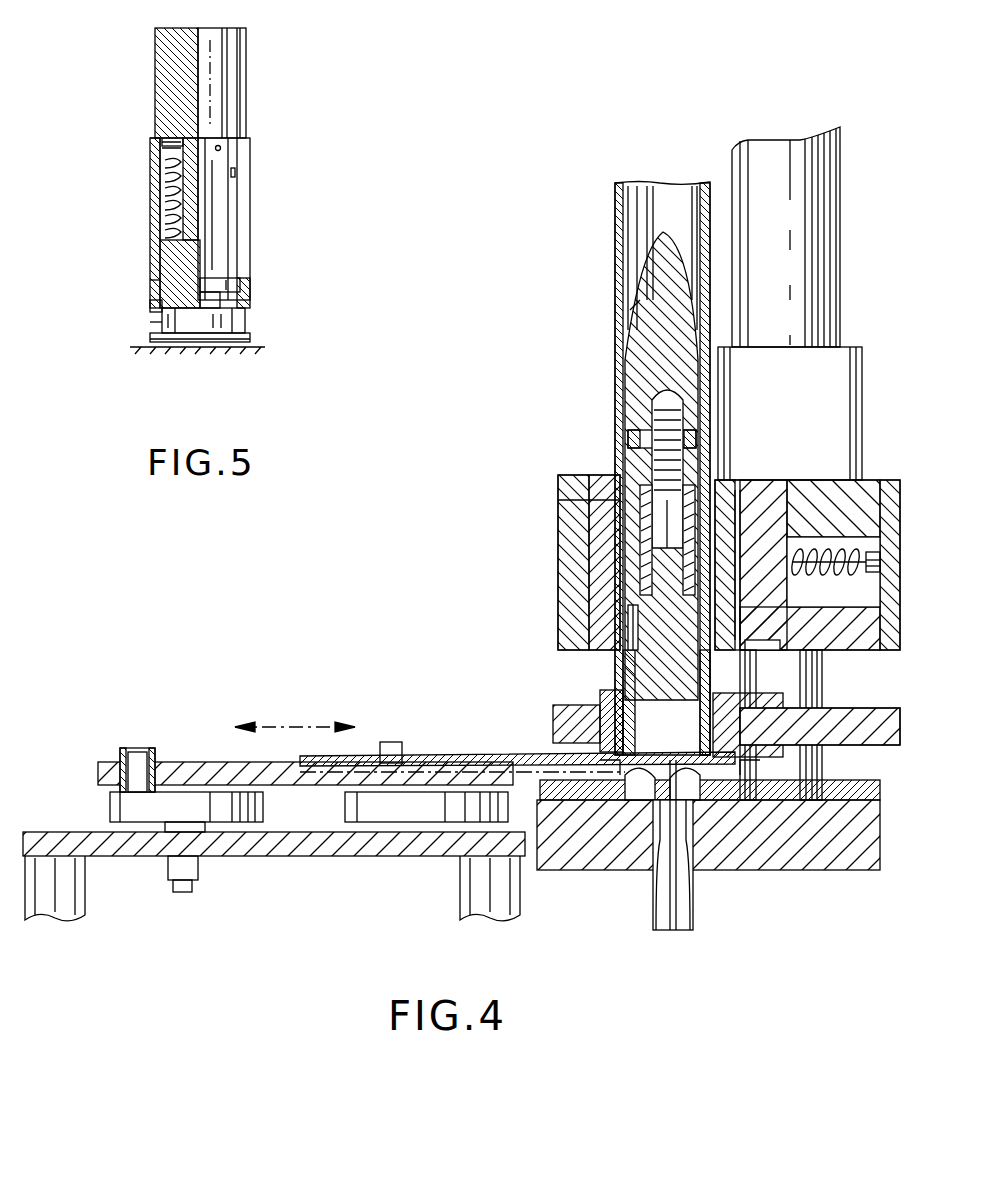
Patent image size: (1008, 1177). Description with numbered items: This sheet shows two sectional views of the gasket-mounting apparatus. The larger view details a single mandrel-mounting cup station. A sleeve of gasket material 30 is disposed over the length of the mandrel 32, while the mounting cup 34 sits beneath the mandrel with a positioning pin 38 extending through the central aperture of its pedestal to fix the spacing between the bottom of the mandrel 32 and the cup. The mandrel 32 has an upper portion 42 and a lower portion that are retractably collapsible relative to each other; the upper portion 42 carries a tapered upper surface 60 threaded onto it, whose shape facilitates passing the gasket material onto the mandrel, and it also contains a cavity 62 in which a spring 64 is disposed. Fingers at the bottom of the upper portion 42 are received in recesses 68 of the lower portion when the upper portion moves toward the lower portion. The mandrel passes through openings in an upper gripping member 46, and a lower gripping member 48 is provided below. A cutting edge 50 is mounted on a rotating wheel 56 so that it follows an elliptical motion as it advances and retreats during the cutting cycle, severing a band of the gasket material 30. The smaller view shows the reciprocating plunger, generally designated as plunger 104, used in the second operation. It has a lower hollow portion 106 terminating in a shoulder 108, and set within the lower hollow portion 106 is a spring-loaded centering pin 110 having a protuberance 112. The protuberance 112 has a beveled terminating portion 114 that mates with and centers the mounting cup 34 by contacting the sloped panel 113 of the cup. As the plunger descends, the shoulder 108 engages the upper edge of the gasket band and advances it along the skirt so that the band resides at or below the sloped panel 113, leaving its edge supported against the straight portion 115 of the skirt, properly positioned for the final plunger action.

In FIG. 5, the gasket material 30 is at (250, 325).
In FIG. 4, the gasket material 30 is at (615, 286).
In FIG. 4, the mandrel 32 is at (648, 340).
In FIG. 5, the mounting cup 34 is at (152, 340).
In FIG. 4, the mounting cup 34 is at (645, 805).
In FIG. 4, the positioning pin 38 is at (690, 812).
In FIG. 4, the upper portion 42 is at (640, 468).
In FIG. 4, the upper gripping member 46 is at (575, 546).
In FIG. 4, the lower gripping member 48 is at (568, 712).
In FIG. 4, the cutting edge 50 is at (530, 755).
In FIG. 4, the rotating wheel 56 is at (115, 805).
In FIG. 4, the tapered upper surface 60 is at (620, 316).
In FIG. 4, the cavity 62 is at (640, 497).
In FIG. 4, the spring 64 is at (642, 579).
In FIG. 4, the recess 68 is at (632, 628).
In FIG. 5, the plunger 104 is at (262, 188).
In FIG. 5, the lower hollow portion 106 is at (168, 220).
In FIG. 5, the shoulder 108 is at (246, 318).
In FIG. 5, the spring-loaded centering pin 110 is at (157, 283).
In FIG. 5, the protuberance 112 is at (215, 300).
In FIG. 5, the sloped panel 113 is at (246, 302).
In FIG. 5, the beveled terminating portion 114 is at (178, 302).
In FIG. 5, the straight portion 115 is at (150, 328).